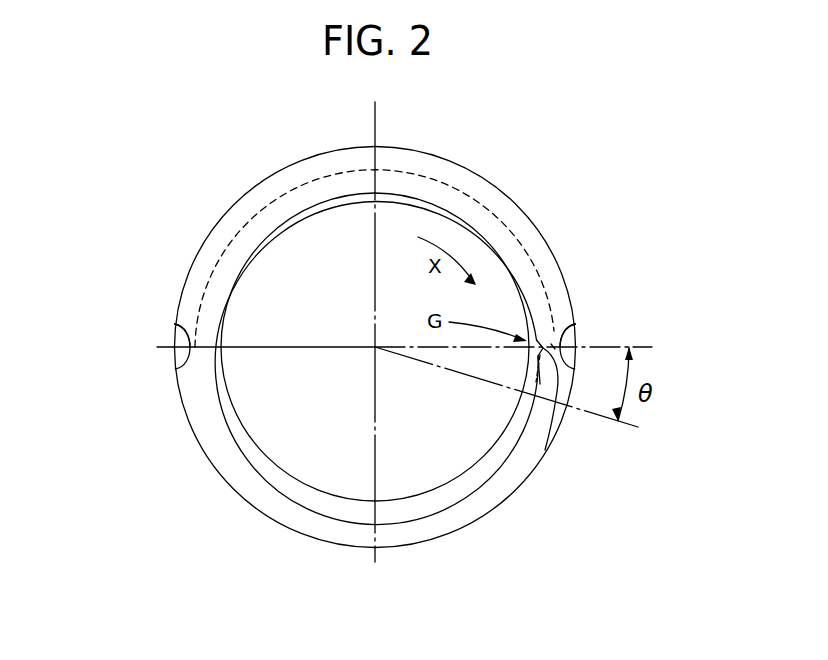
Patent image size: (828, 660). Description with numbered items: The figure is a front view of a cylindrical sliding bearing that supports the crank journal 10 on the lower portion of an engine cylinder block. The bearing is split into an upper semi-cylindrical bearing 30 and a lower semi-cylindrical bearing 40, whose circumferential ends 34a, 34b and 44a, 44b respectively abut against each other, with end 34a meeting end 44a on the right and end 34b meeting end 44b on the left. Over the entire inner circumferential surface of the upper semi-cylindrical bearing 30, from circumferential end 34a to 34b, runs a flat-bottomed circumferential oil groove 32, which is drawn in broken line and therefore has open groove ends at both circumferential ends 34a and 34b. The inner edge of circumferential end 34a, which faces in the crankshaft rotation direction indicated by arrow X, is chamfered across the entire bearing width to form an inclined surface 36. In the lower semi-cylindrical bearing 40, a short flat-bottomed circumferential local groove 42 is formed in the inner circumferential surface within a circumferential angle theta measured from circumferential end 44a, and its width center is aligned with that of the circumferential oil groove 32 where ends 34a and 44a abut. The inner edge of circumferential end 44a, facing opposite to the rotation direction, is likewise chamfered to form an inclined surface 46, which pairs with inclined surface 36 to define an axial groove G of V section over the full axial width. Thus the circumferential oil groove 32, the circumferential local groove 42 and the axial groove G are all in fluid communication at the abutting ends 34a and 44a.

The crank journal 10 is at (311, 452).
The upper semi-cylindrical bearing 30 is at (207, 237).
The circumferential oil groove 32 is at (458, 189).
The circumferential end 34a is at (577, 369).
The circumferential end 34b is at (177, 367).
The inclined surface 36 is at (551, 344).
The lower semi-cylindrical bearing 40 is at (214, 452).
The circumferential local groove 42 is at (536, 367).
The circumferential end 44a is at (575, 324).
The circumferential end 44b is at (176, 323).
The inclined surface 46 is at (556, 427).